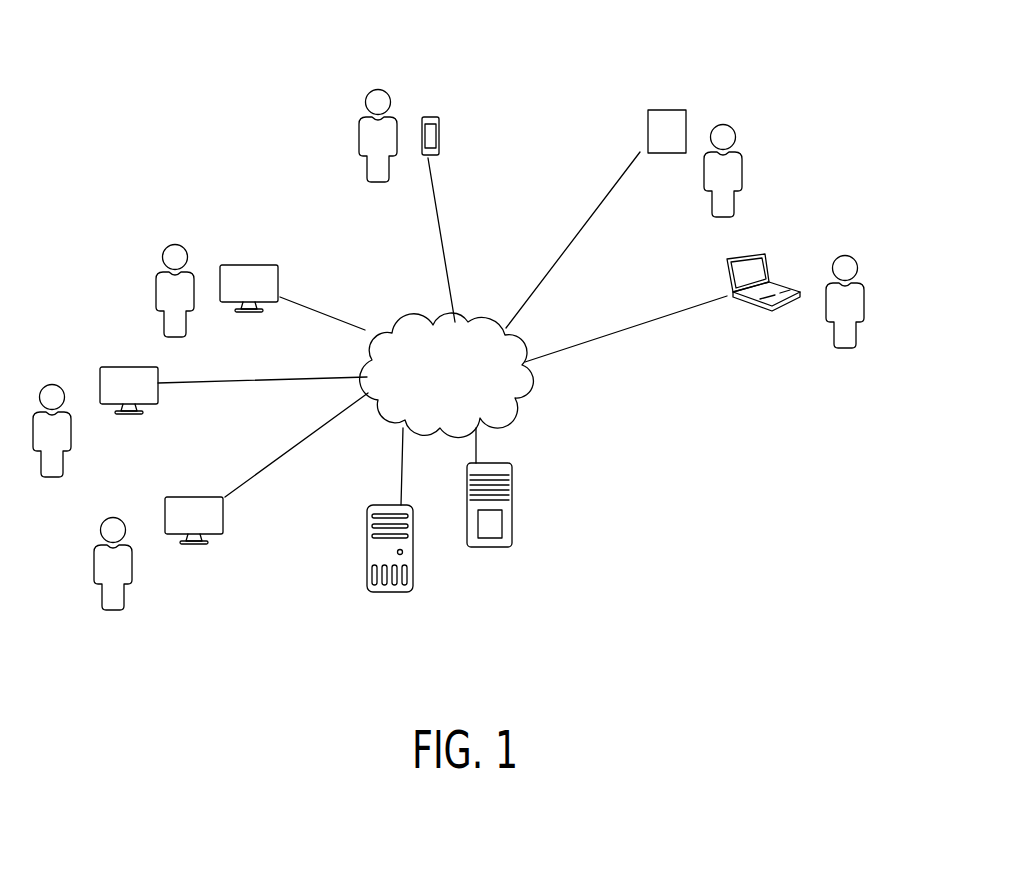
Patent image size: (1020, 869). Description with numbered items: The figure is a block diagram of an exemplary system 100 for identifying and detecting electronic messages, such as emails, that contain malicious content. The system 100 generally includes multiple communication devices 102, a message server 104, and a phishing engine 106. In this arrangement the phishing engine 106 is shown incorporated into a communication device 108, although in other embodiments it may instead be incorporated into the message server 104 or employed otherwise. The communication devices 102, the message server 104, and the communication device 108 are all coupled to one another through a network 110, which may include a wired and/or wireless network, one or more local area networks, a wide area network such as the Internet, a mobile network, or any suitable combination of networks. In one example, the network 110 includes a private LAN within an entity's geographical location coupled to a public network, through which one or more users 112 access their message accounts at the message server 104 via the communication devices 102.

The system 100 is at (100, 167).
The communication device 102 is at (258, 264).
The message server 104 is at (405, 592).
The phishing engine 106 is at (502, 525).
The communication device 108 is at (524, 507).
The network 110 is at (523, 372).
The user 112 is at (52, 378).